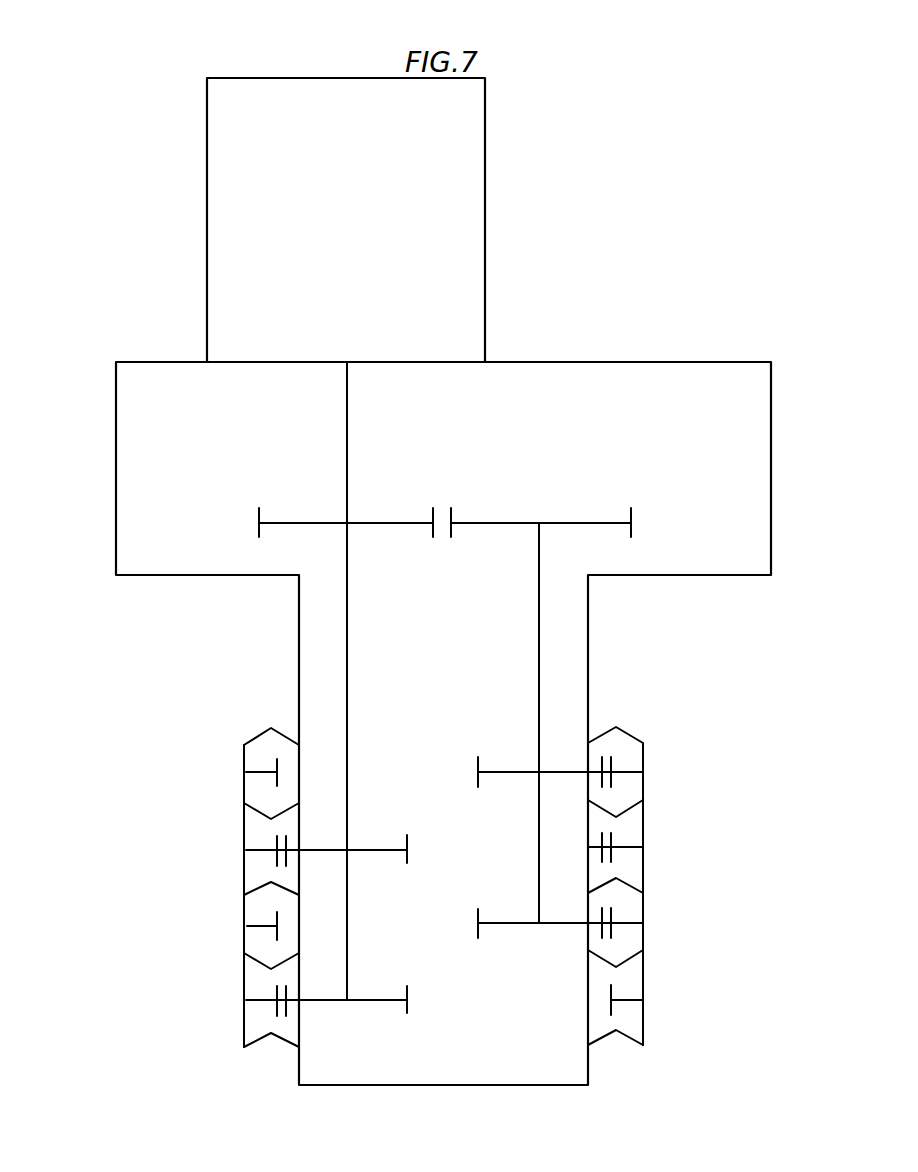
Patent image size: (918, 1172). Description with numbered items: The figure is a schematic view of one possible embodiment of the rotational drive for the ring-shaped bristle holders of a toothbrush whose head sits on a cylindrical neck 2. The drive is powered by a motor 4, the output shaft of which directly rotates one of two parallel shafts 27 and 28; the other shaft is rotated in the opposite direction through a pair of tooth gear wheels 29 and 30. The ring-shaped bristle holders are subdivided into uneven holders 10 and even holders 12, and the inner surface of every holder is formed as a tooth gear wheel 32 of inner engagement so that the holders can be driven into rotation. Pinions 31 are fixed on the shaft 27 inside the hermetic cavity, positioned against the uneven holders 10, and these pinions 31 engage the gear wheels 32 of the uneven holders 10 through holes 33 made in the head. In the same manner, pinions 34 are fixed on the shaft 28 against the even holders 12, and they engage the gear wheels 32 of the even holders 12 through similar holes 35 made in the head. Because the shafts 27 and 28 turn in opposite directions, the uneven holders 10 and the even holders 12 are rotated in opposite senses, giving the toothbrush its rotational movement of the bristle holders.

The cylindrical neck 2 is at (413, 723).
The motor 4 is at (477, 220).
The uneven holders 10 is at (673, 886).
The even holders 12 is at (673, 931).
The shaft 27 is at (647, 723).
The shaft 28 is at (236, 681).
The tooth gear wheel 29 is at (279, 416).
The tooth gear wheel 30 is at (606, 414).
The pinions 31 is at (618, 944).
The tooth gear wheels 32 is at (200, 863).
The holes 33 is at (618, 781).
The pinions 34 is at (265, 1058).
The holes 35 is at (265, 810).